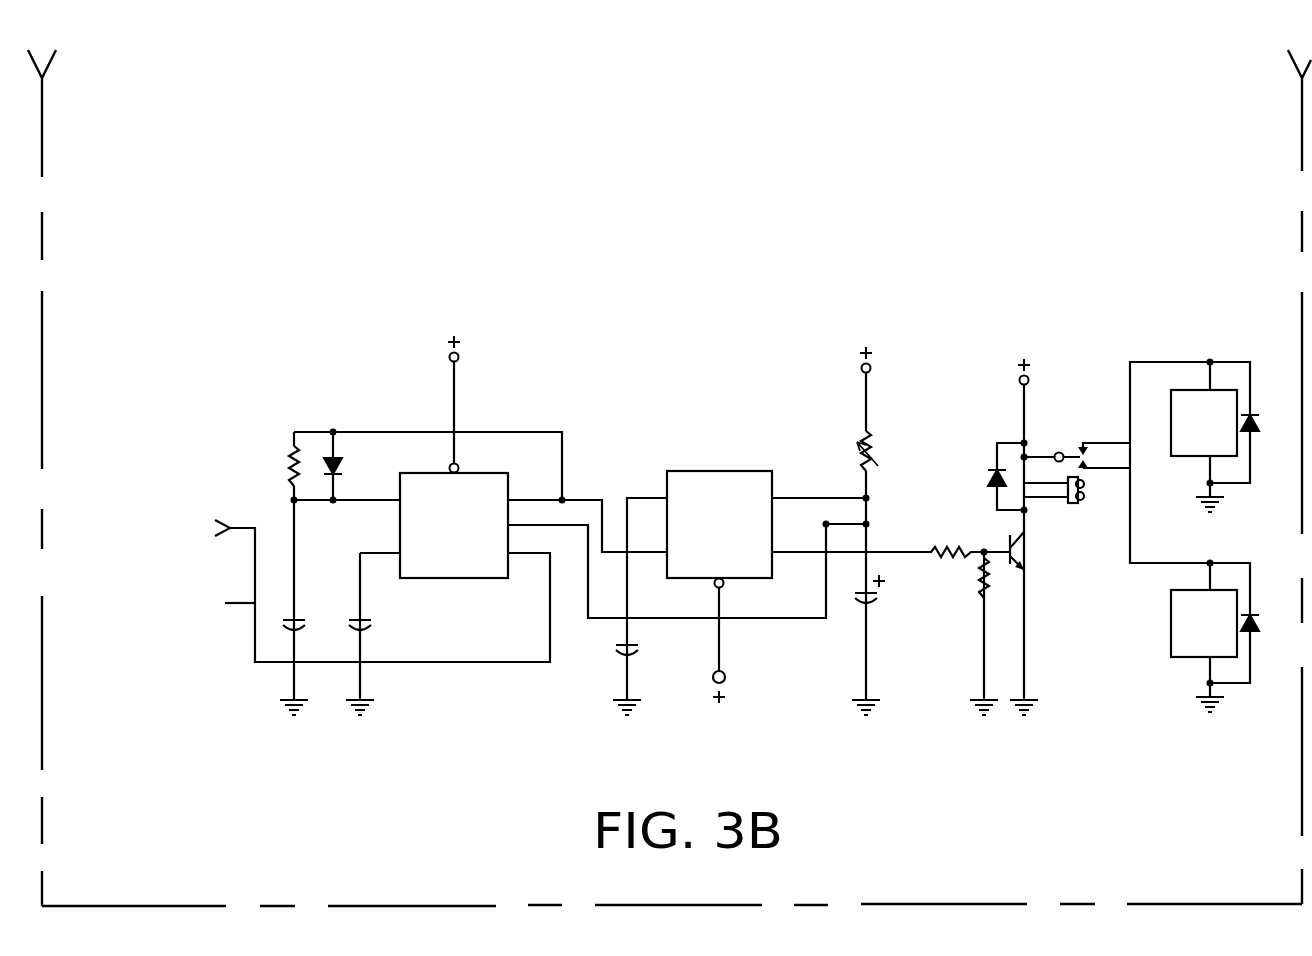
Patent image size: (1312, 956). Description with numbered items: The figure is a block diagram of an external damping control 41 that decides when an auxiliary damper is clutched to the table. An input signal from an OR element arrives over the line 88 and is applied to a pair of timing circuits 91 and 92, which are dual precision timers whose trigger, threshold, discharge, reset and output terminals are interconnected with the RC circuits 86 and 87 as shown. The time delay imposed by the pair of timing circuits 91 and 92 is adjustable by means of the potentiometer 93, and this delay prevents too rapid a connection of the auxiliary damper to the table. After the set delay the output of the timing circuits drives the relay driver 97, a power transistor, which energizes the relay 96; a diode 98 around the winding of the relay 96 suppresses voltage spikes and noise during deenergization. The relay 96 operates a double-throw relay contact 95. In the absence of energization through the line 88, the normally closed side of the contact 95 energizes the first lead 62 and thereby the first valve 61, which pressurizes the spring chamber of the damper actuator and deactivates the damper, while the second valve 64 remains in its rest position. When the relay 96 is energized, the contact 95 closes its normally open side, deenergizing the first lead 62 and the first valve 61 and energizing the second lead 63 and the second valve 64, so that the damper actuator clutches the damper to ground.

The control circuit 41 is at (1073, 236).
The first valve 61 is at (1223, 433).
The first lead 62 is at (1145, 362).
The second lead 63 is at (1132, 500).
The second valve 64 is at (1223, 633).
The RC circuit 86 is at (297, 570).
The RC circuit 87 is at (868, 508).
The line 88 is at (222, 608).
The timing circuit 91 is at (433, 573).
The timing circuit 92 is at (742, 480).
The potentiometer 93 is at (858, 437).
The double-throw relay contact 95 is at (1067, 450).
The relay 96 is at (1072, 505).
The relay driver 97 is at (1023, 552).
The diode 98 is at (992, 468).